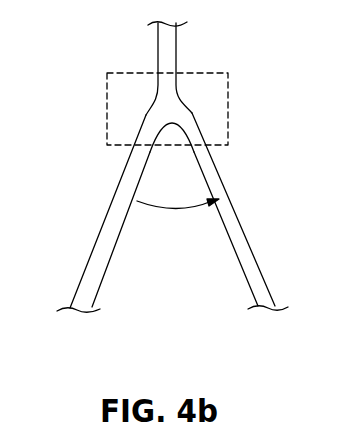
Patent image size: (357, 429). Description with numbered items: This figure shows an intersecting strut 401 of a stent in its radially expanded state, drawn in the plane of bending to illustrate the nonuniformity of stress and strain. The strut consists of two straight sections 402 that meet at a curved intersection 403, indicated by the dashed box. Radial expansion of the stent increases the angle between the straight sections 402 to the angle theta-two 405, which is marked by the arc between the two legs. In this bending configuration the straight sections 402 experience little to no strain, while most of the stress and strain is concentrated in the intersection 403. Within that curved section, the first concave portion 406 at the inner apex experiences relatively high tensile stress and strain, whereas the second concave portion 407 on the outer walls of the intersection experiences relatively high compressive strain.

The intersecting strut 401 is at (146, 293).
The straight sections 402 is at (86, 270).
The intersection 403 is at (228, 74).
The angle θ2 405 is at (137, 201).
The first concave portion 406 is at (172, 123).
The second concave portion 407 is at (149, 108).